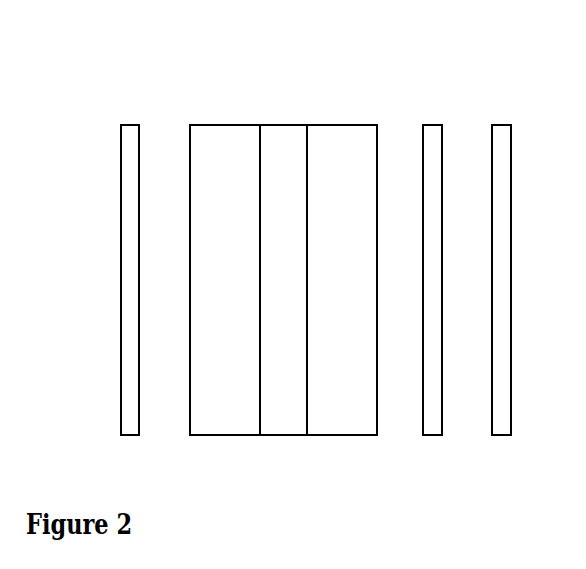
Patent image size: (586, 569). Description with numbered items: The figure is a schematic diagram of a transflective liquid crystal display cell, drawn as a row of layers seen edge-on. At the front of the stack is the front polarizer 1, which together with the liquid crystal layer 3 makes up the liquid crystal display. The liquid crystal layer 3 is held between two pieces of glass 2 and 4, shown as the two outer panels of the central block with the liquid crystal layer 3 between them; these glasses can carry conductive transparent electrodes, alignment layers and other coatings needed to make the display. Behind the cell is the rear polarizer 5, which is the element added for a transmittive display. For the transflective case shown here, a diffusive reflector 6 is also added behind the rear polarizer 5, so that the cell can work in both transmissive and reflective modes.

The front polarizer 1 is at (118, 122).
The glass 2 is at (225, 280).
The liquid crystal layer 3 is at (283, 170).
The glass 4 is at (342, 280).
The rear polarizer 5 is at (429, 120).
The diffusive reflector 6 is at (498, 120).